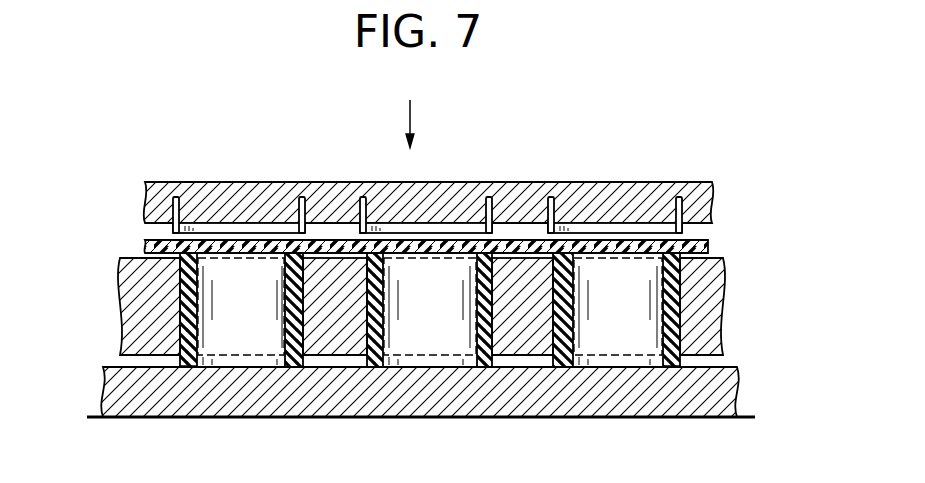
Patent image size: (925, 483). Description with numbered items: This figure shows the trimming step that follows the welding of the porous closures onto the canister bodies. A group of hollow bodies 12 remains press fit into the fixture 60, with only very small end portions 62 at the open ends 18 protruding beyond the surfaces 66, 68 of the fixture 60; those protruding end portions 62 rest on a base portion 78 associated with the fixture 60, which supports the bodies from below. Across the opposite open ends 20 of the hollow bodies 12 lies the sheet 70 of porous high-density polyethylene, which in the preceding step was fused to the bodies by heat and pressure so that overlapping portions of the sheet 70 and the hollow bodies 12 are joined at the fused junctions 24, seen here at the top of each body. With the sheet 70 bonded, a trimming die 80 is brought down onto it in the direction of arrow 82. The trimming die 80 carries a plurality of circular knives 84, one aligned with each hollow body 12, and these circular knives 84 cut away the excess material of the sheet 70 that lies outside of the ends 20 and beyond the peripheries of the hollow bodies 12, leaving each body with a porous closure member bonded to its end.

The hollow body 12 is at (292, 333).
The open end 18 is at (250, 368).
The open end 20 is at (597, 252).
The fused junction 24 is at (430, 248).
The fixture 60 is at (724, 300).
The end portion 62 is at (182, 365).
The surface 66 is at (330, 266).
The surface 68 is at (333, 367).
The sheet 70 is at (145, 247).
The base portion 78 is at (728, 398).
The trimming die 80 is at (145, 205).
The arrow 82 is at (410, 112).
The circular knife 84 is at (298, 215).